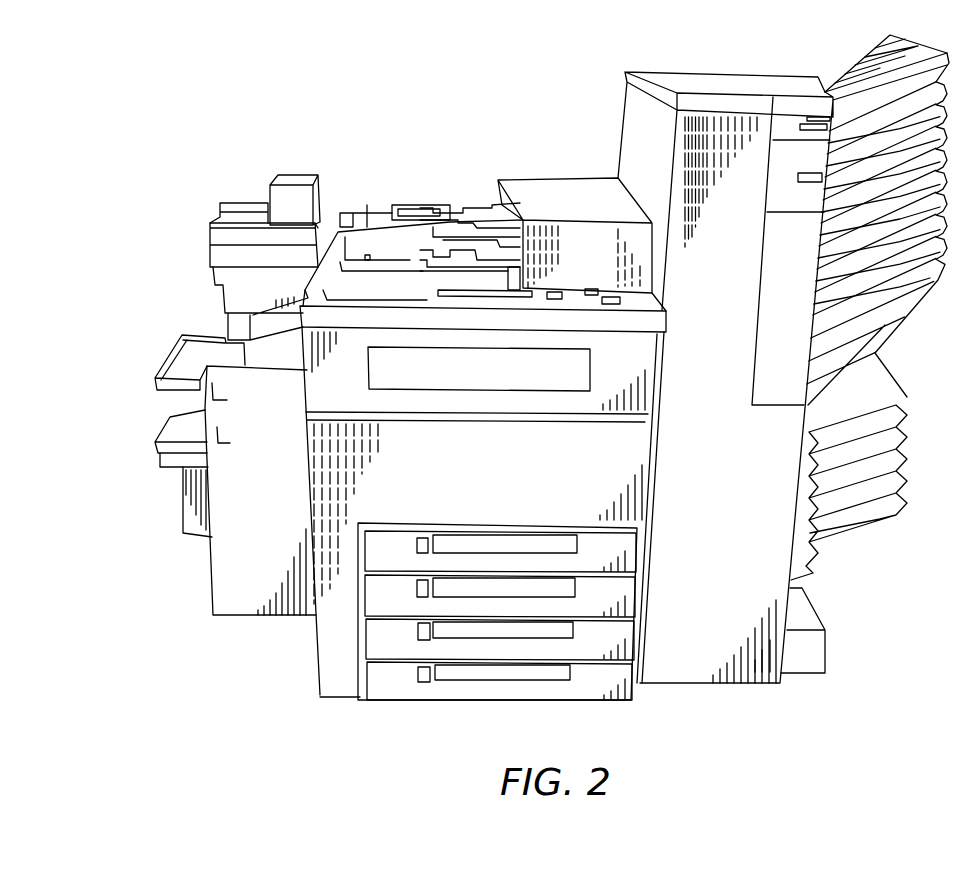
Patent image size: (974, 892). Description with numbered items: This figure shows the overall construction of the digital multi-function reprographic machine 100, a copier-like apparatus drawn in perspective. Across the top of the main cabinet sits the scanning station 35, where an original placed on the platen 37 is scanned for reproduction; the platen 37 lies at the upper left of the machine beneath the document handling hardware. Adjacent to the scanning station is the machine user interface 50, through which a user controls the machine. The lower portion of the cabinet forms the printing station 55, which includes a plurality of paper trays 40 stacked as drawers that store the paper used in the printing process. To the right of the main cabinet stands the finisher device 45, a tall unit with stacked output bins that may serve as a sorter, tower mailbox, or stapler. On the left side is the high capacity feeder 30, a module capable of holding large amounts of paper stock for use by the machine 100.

The digital multi-function reprographic machine 100 is at (440, 86).
The high capacity feeder 30 is at (240, 615).
The scanning station 35 is at (418, 212).
The platen 37 is at (357, 276).
The paper trays 40 is at (618, 553).
The finisher device 45 is at (740, 687).
The machine user interface 50 is at (494, 298).
The printing station 55 is at (316, 693).